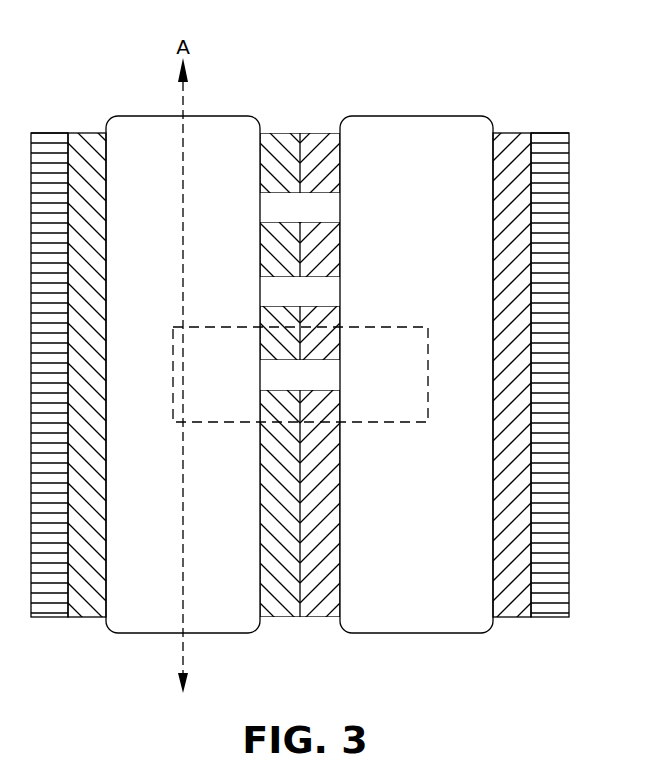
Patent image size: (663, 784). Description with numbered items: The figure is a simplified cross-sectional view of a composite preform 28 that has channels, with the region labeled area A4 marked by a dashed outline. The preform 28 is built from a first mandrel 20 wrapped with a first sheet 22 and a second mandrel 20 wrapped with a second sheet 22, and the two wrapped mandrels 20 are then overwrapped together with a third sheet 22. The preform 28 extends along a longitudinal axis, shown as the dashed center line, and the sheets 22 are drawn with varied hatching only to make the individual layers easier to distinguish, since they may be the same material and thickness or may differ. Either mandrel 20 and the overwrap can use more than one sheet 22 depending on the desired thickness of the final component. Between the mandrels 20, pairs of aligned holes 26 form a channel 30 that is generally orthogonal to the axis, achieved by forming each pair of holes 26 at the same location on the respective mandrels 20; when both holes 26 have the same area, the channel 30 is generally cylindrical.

The mandrel 20 is at (230, 559).
The sheet 22 is at (91, 607).
The hole 26 is at (272, 228).
The preform 28 is at (423, 86).
The channel 30 is at (316, 218).
The area A4 is at (394, 327).